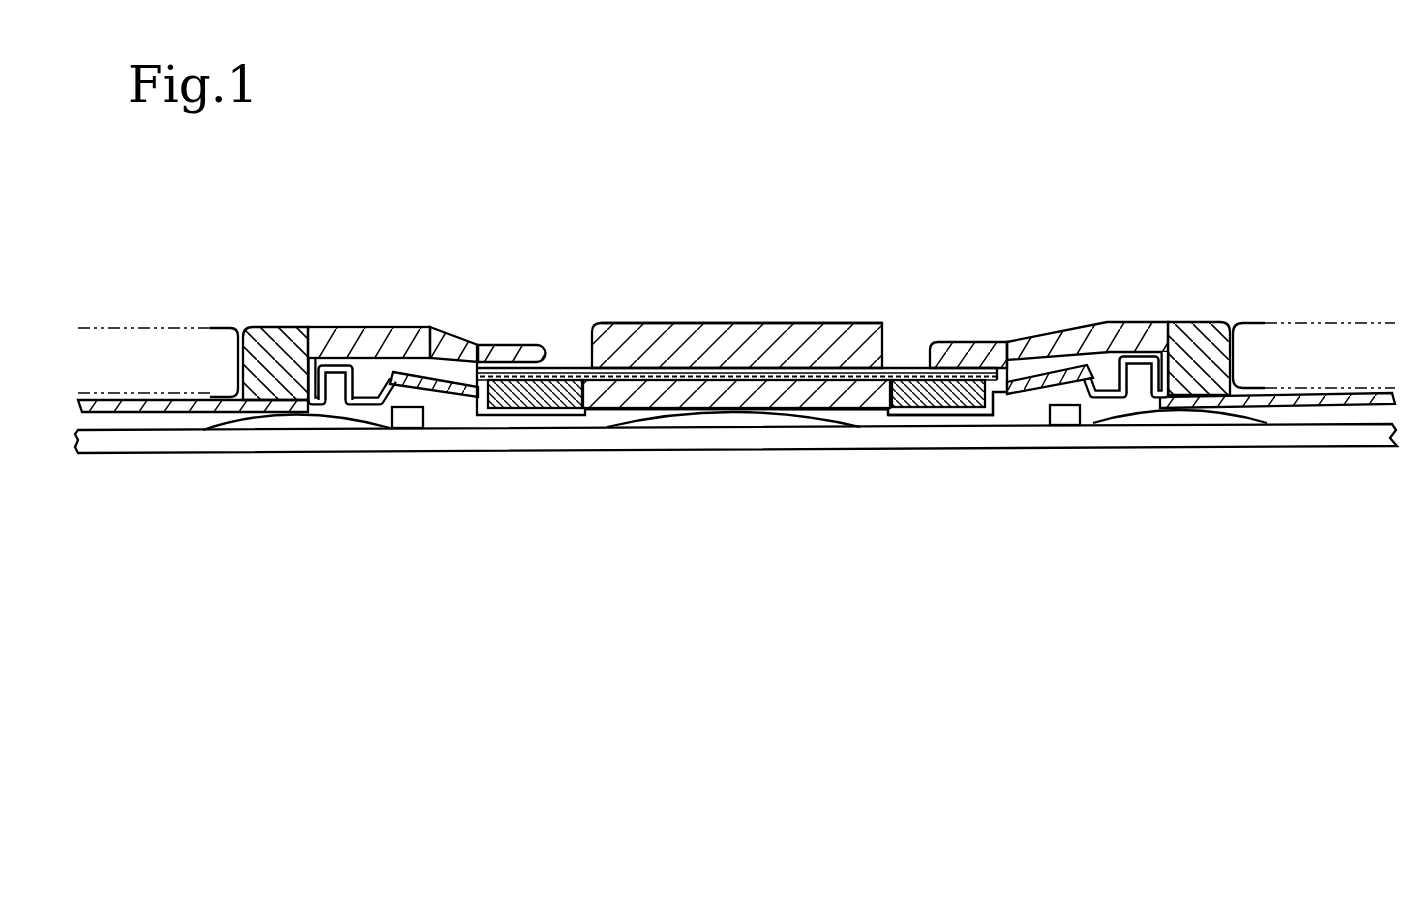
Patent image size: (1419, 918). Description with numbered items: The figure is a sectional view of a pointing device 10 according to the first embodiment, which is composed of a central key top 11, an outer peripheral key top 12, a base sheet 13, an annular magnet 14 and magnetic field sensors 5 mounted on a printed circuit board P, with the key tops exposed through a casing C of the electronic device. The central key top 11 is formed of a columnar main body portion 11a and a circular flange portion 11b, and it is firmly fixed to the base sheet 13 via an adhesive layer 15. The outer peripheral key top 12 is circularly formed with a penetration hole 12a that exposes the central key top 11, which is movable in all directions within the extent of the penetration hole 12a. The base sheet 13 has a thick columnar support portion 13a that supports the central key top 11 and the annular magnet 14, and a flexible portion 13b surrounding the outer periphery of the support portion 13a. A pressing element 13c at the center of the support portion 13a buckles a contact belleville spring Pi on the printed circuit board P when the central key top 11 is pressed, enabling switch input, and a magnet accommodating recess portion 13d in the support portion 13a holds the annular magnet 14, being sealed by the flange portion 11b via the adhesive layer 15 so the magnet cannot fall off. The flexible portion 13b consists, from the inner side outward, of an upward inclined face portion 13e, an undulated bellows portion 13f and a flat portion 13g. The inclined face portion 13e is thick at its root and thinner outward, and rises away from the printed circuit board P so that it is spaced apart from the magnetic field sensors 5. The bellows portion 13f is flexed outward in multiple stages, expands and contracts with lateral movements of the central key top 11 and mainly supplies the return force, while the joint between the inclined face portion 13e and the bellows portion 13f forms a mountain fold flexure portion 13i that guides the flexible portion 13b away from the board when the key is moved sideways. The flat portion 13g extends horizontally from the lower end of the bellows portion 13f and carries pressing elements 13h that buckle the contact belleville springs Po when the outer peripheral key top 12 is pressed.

The pointing device 10 is at (965, 247).
The central key top 11 is at (819, 326).
The main body portion 11a is at (735, 323).
The flange portion 11b is at (551, 369).
The outer peripheral key top 12 is at (1157, 323).
The penetration hole 12a is at (928, 342).
The base sheet 13 is at (1283, 392).
The support portion 13a is at (815, 414).
The flexible portion 13b is at (1026, 338).
The pressing element 13c is at (730, 412).
The magnet accommodating recess portion 13d is at (967, 414).
The upward inclined face portion 13e is at (450, 332).
The bellows portion 13f is at (314, 327).
The flat portion 13g is at (153, 398).
The pressing elements 13h is at (283, 418).
The mountain fold flexure portion 13i is at (386, 365).
The annular magnet 14 is at (912, 410).
The adhesive layer 15 is at (663, 370).
The magnetic field sensors 5 is at (425, 420).
The printed circuit board P is at (1313, 447).
The contact belleville spring Pi is at (607, 430).
The contact belleville springs Po is at (207, 430).
The casing C is at (1354, 322).